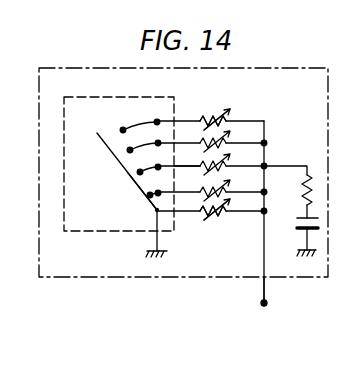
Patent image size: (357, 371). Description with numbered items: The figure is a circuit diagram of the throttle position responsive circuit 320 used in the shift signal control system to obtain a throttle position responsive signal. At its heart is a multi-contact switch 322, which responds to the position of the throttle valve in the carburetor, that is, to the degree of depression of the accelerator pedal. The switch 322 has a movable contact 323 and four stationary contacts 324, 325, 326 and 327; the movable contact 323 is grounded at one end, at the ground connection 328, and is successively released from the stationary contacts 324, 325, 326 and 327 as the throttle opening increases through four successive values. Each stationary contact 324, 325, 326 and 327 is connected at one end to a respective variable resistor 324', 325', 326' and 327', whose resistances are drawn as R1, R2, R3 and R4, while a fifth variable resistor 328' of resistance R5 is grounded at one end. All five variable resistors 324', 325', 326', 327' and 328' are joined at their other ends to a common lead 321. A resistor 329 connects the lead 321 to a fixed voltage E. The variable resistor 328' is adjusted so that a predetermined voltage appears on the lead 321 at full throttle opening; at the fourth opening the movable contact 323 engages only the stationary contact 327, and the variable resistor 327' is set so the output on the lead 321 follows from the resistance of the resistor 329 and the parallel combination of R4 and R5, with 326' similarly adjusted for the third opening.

The throttle position responsive circuit 320 is at (183, 157).
The lead 321 is at (266, 289).
The multi-contact switch 322 is at (113, 94).
The movable contact 323 is at (116, 157).
The stationary contact 324 is at (126, 151).
The stationary contact 325 is at (157, 136).
The stationary contact 326 is at (115, 191).
The stationary contact 327 is at (122, 229).
The ground 328 is at (129, 253).
The resistor 329 is at (312, 159).
The variable resistor 324' is at (217, 99).
The variable resistor 325' is at (247, 104).
The variable resistor 326' is at (181, 180).
The variable resistor 327' is at (198, 232).
The variable resistor 328' is at (227, 237).
The resistor R1 is at (229, 113).
The resistor R2 is at (229, 137).
The resistor R3 is at (229, 161).
The resistance of variable resistor 327' R4 is at (229, 186).
The resistance of variable resistor 328' R5 is at (225, 220).